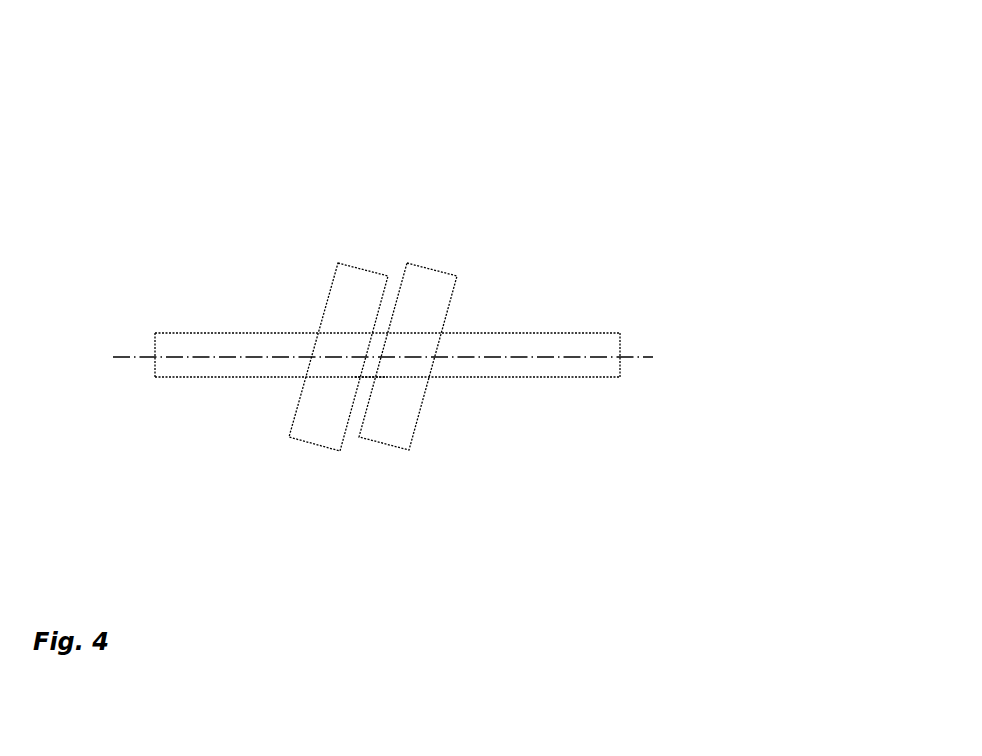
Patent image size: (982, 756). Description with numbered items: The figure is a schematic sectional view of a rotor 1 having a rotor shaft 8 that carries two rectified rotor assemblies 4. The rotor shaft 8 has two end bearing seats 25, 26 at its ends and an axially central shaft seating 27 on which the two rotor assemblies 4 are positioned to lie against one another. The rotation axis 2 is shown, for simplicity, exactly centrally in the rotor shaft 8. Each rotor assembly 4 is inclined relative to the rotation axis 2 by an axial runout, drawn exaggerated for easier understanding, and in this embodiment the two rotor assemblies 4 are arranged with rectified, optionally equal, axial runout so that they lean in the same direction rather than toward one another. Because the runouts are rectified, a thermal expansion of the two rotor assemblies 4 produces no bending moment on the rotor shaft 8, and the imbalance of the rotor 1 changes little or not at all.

The rotor 1 is at (784, 46).
The rotation axis 2 is at (644, 355).
The rotor assemblies 4 is at (425, 268).
The rotor shaft 8 is at (555, 370).
The end bearing seat 25 is at (613, 322).
The end bearing seat 26 is at (160, 390).
The shaft seating 27 is at (366, 392).